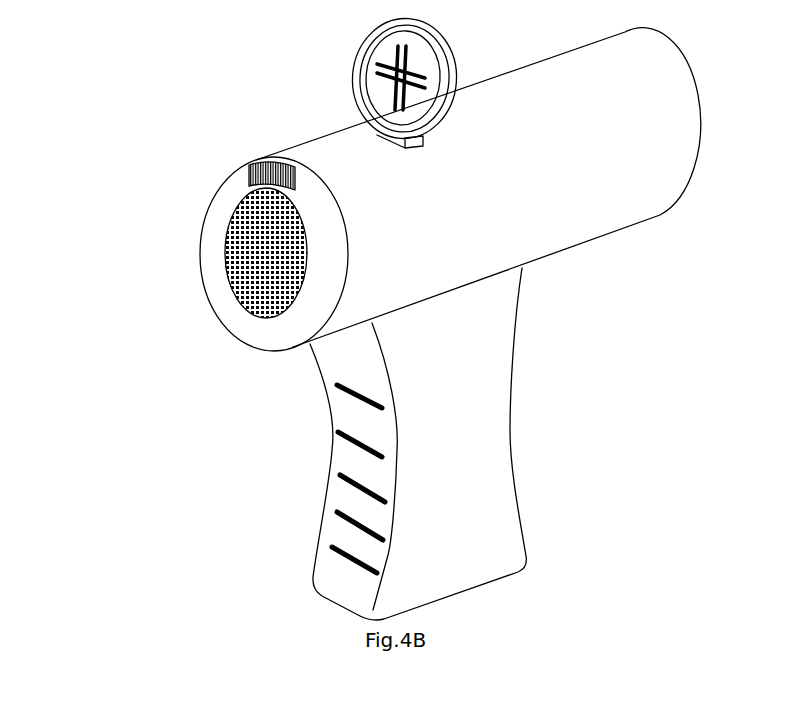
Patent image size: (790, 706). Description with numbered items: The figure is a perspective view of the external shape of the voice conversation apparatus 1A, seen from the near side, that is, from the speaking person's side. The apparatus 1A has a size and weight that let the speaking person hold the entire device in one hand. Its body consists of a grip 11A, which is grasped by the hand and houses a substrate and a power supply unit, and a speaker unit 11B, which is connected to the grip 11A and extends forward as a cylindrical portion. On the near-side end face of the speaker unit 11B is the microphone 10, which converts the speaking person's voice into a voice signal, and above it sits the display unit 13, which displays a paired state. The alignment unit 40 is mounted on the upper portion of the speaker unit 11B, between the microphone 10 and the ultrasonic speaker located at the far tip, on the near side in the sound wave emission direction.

The voice conversation apparatus 1A is at (235, 128).
The microphone 10 is at (238, 242).
The grip 11A is at (463, 440).
The speaker unit 11B is at (478, 110).
The display unit 13 is at (265, 170).
The alignment unit 40 is at (343, 95).